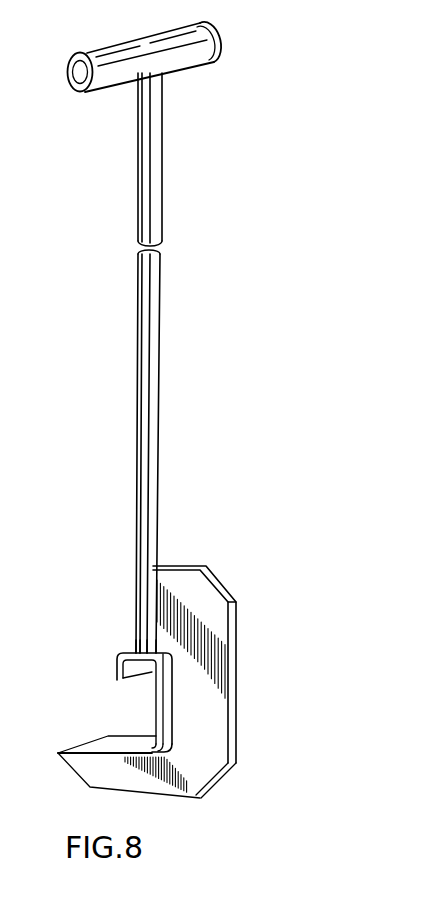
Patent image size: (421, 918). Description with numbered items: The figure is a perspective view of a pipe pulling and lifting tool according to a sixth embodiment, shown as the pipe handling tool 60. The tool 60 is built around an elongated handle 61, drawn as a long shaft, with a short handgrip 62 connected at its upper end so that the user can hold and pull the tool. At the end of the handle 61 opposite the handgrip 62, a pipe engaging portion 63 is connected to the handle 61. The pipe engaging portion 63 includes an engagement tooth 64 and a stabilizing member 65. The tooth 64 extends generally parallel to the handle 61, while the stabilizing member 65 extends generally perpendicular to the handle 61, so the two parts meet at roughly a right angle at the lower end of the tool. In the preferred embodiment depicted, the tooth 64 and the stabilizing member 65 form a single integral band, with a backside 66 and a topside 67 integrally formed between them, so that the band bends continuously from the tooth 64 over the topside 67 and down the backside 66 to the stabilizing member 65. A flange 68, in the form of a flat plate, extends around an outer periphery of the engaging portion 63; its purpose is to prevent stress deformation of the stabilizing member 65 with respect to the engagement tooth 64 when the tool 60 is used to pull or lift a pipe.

The pipe handling tool 60 is at (189, 421).
The elongated handle 61 is at (160, 317).
The handgrip 62 is at (168, 47).
The pipe engaging portion 63 is at (257, 717).
The engagement tooth 64 is at (118, 672).
The stabilizing member 65 is at (105, 742).
The backside 66 is at (160, 720).
The topside 67 is at (140, 648).
The flange 68 is at (197, 773).